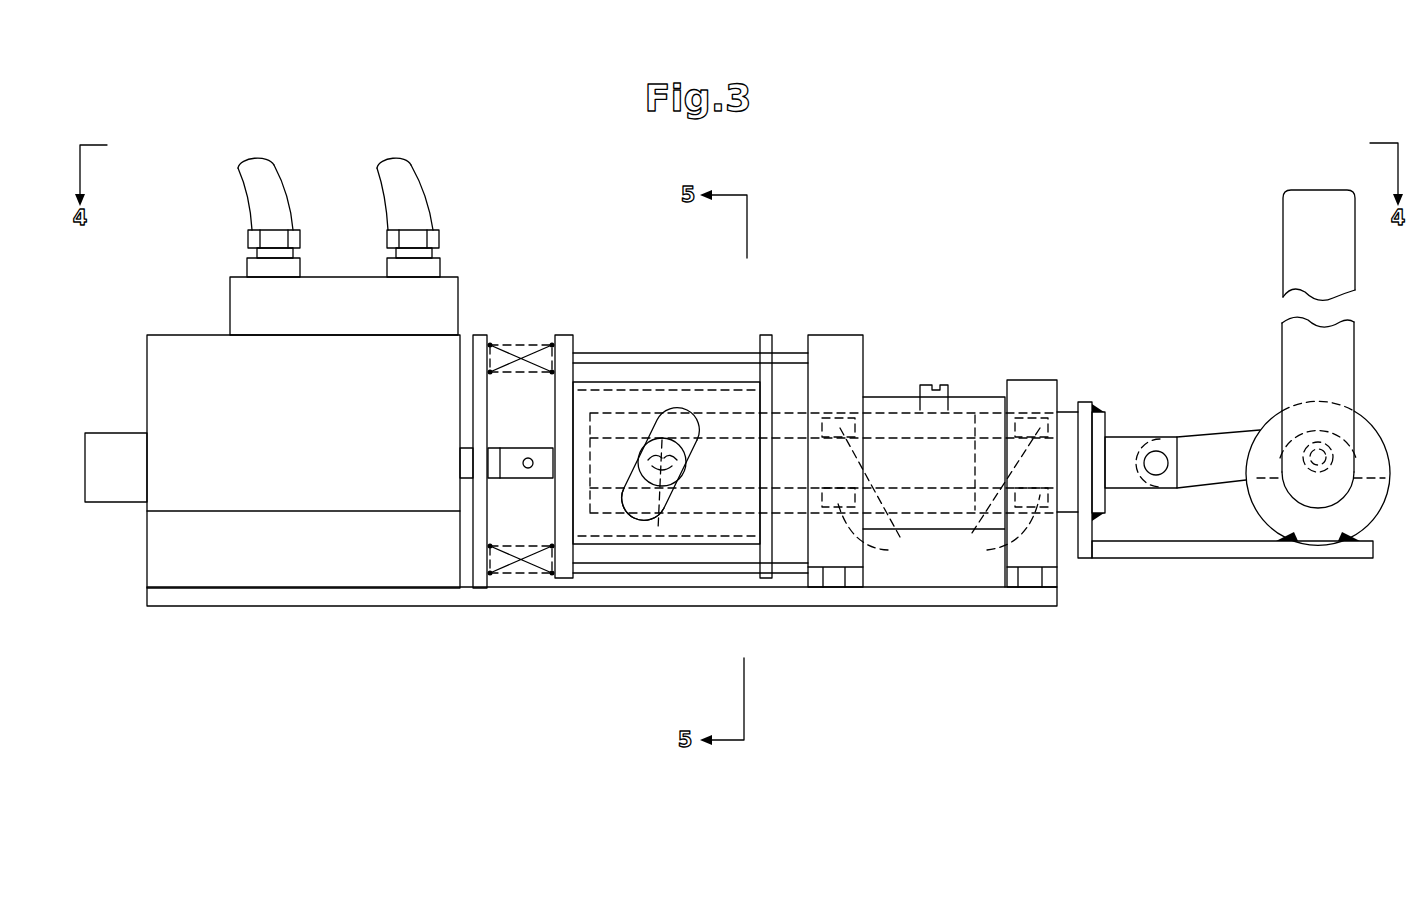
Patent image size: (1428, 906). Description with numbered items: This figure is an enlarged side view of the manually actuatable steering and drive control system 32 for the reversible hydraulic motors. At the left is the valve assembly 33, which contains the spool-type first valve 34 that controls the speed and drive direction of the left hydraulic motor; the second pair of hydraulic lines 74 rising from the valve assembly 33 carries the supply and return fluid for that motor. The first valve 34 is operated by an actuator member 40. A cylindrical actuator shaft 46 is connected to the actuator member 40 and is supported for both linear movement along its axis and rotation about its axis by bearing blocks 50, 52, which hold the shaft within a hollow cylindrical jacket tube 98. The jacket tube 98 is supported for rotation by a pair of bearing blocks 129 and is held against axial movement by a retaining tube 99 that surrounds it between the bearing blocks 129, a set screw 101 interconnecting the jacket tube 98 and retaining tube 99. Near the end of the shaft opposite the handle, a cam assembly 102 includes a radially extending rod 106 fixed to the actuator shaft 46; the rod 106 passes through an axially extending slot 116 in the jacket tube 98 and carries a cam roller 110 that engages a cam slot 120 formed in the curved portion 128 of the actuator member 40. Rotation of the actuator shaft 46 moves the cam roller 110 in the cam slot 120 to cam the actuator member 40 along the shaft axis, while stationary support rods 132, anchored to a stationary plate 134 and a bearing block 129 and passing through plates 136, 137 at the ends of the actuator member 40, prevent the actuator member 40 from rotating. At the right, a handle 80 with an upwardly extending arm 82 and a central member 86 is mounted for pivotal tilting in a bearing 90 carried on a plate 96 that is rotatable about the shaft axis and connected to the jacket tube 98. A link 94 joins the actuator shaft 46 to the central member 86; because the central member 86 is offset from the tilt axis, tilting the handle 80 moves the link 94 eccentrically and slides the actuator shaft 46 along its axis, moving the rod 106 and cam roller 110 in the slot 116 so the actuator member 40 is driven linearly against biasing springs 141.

The second pair of hydraulic lines 74 is at (397, 190).
The valve assembly 33 is at (195, 305).
The first valve 34 is at (121, 455).
The actuator shaft 46 is at (617, 437).
The actuator member 40 is at (515, 473).
The stationary plate 134 is at (480, 340).
The biasing springs 141 is at (490, 343).
The plate 136 is at (563, 335).
The curved portion 128 is at (593, 387).
The stationary support rods 132 is at (630, 360).
The plate 137 is at (768, 575).
The cam slot 120 is at (692, 408).
The rod 106 is at (650, 520).
The cam roller 110 is at (656, 440).
The cam assembly 102 is at (658, 535).
The slot 116 is at (680, 467).
The steering and drive control system 32 is at (950, 366).
The bearing blocks 129 is at (853, 352).
The retaining tube 99 is at (890, 398).
The set screw 101 is at (947, 390).
The jacket tube 98 is at (975, 415).
The bearing block 50 is at (878, 494).
The bearing block 52 is at (999, 494).
The plate 96 is at (1225, 548).
The link 94 is at (1210, 462).
The bearing 90 is at (1368, 445).
The central member 86 is at (1318, 460).
The handle 80 is at (1268, 308).
The arm 82 is at (1307, 256).